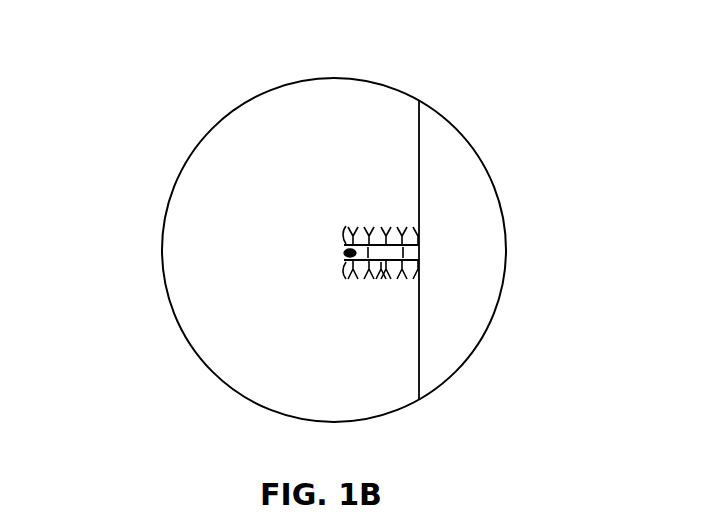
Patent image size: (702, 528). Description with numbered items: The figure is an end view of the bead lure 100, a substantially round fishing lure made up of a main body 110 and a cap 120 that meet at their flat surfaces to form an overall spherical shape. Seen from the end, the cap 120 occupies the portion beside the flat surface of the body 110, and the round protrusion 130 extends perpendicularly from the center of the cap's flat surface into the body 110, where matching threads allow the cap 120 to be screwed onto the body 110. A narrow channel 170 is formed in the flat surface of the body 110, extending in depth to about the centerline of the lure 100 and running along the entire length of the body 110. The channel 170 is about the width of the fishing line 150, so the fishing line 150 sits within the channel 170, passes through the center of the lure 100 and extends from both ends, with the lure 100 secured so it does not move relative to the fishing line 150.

The bead lure 100 is at (113, 75).
The main body 110 is at (228, 136).
The cap 120 is at (473, 314).
The round protrusion 130 is at (393, 228).
The fishing line 150 is at (343, 253).
The narrow channel 170 is at (384, 262).